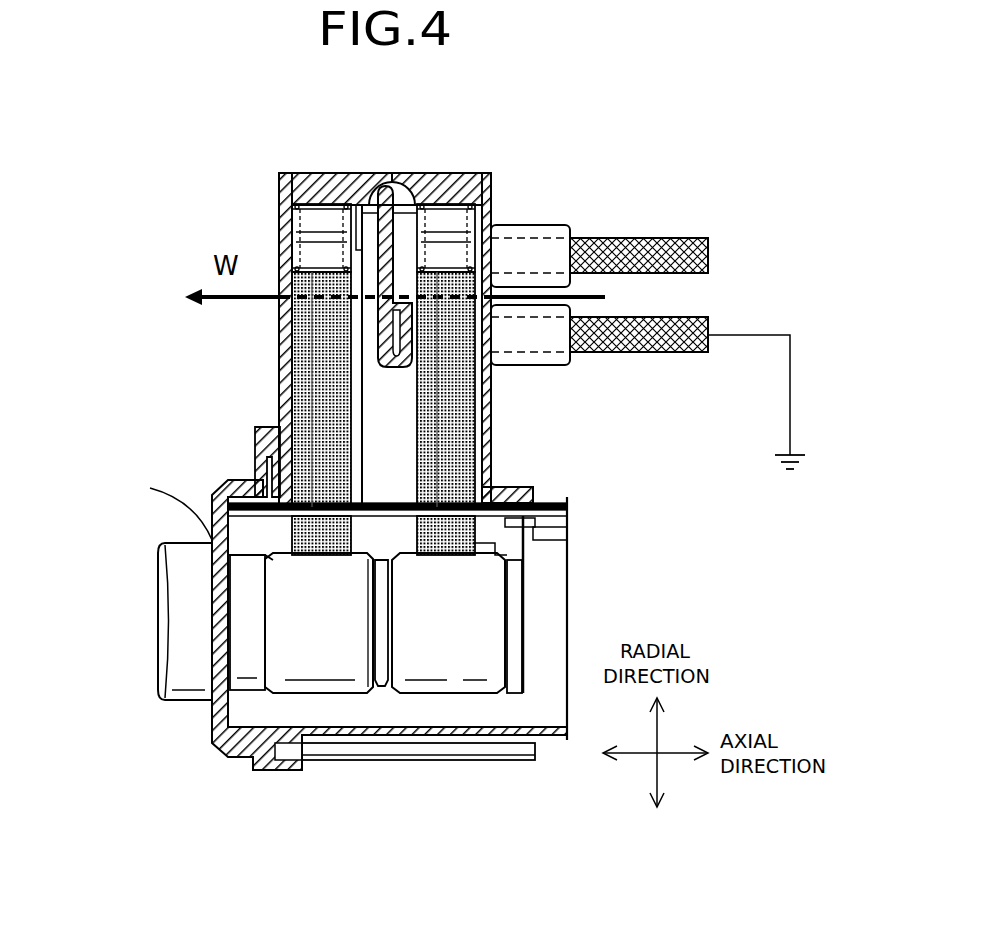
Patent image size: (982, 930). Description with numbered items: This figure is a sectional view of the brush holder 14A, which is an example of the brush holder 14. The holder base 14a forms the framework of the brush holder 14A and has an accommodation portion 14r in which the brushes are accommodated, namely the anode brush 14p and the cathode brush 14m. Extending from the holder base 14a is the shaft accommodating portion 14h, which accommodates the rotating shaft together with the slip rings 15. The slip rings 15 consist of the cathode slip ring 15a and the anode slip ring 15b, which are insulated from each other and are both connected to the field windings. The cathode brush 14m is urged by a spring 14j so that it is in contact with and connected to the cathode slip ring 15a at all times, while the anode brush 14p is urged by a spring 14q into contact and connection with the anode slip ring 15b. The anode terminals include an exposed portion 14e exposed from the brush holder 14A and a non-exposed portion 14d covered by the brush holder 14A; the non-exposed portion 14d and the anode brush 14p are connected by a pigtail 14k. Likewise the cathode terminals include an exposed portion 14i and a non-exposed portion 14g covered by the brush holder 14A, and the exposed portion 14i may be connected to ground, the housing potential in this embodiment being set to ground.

The brush holder 14 is at (451, 324).
The brush holder 14A is at (451, 324).
The holder base 14a is at (322, 183).
The spring 14j is at (335, 205).
The pigtail 14k is at (393, 187).
The spring 14q is at (462, 183).
The accommodation portion 14r is at (493, 207).
The non-exposed portion 14d is at (540, 257).
The exposed portion 14e is at (665, 252).
The non-exposed portion 14g is at (538, 338).
The exposed portion 14i is at (668, 337).
The cathode brush 14m is at (320, 333).
The anode brush 14p is at (447, 385).
The shaft accommodating portion 14h is at (212, 540).
The slip rings 15 is at (397, 701).
The cathode slip ring 15a is at (332, 640).
The anode slip ring 15b is at (448, 640).